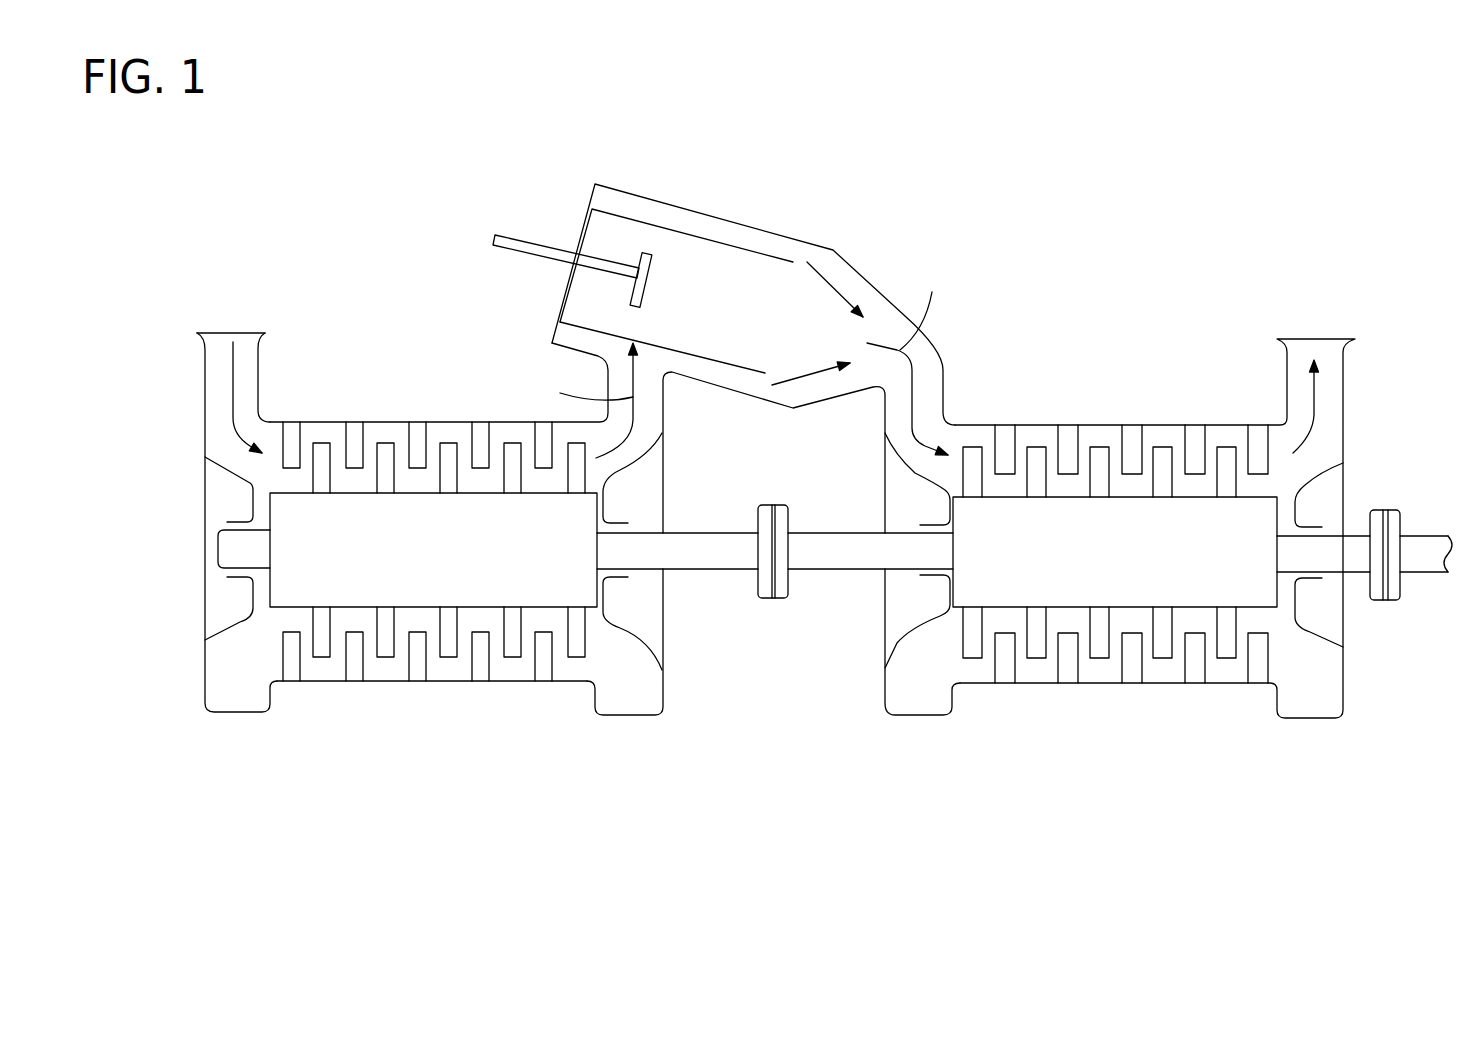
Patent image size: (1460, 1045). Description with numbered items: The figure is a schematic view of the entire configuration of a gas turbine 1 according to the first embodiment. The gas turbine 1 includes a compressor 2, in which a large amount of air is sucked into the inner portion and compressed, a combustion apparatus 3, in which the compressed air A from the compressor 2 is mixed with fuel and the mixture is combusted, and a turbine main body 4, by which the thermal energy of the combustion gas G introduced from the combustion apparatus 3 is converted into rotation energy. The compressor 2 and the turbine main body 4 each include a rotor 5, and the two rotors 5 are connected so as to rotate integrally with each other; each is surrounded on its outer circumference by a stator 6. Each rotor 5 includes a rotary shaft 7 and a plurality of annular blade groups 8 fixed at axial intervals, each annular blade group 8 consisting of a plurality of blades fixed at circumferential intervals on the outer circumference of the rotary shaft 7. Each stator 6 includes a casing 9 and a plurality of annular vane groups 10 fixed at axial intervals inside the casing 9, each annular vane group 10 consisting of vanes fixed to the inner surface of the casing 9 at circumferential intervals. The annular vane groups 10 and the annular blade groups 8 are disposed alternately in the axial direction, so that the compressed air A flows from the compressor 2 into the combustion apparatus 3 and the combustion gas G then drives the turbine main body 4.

The gas turbine 1 is at (1037, 125).
The compressor 2 is at (445, 687).
The combustion apparatus 3 is at (780, 232).
The turbine main body 4 is at (1193, 687).
The rotor 5 is at (272, 625).
The stator 6 is at (604, 693).
The rotary shaft 7 is at (403, 575).
The annular blade group 8 is at (1036, 455).
The casing 9 is at (385, 398).
The annular vane group 10 is at (1005, 432).